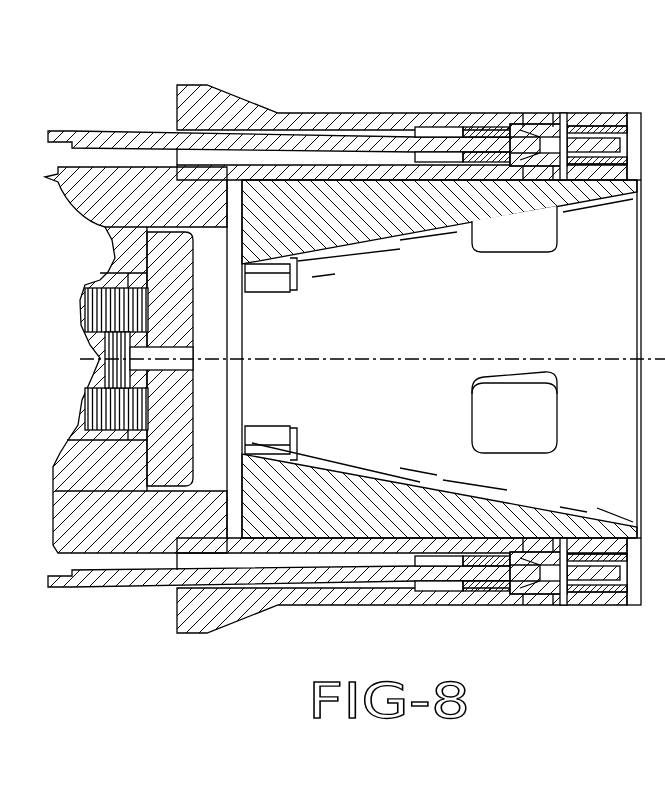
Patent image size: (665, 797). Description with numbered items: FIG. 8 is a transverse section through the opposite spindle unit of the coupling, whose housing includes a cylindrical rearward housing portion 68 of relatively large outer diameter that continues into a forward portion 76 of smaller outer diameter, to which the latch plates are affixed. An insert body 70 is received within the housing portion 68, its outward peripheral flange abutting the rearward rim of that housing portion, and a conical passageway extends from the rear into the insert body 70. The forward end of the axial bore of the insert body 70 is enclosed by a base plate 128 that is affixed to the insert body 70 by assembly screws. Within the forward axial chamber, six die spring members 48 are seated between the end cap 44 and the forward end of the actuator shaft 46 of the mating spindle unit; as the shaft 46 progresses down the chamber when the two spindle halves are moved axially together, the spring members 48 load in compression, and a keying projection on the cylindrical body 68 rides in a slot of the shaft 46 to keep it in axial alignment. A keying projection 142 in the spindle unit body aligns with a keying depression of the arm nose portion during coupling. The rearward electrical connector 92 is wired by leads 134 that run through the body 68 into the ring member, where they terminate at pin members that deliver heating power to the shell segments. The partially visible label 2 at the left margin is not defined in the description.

The injection molding apparatus 2 is at (4, 267).
The end cap 44 is at (183, 277).
The actuator shaft 46 is at (77, 194).
The die spring members 48 is at (107, 403).
The housing rearward portion 68 is at (323, 117).
The insert body 70 is at (437, 212).
The housing forward portion 76 is at (597, 141).
The electrical connector 92 is at (596, 571).
The base plate 128 is at (233, 413).
The leads 134 is at (118, 131).
The keying projection 142 is at (284, 282).